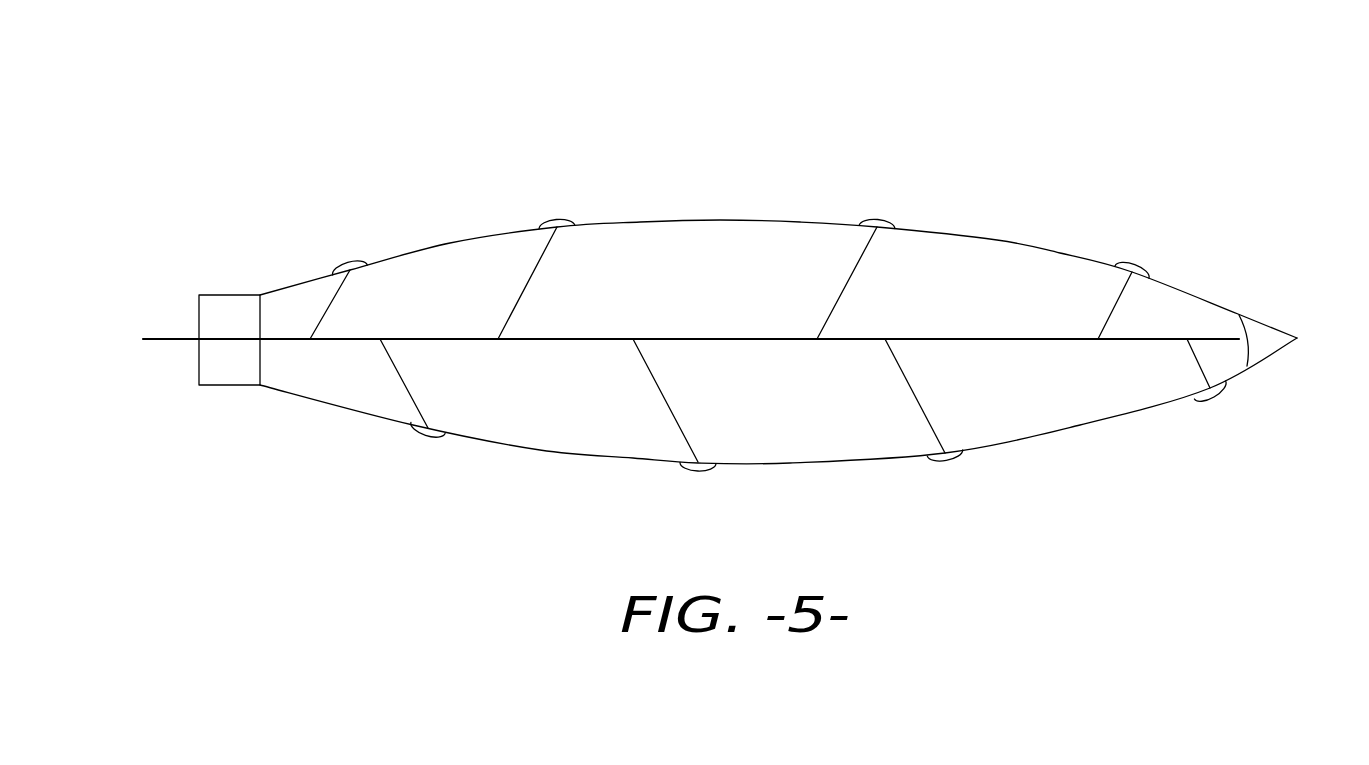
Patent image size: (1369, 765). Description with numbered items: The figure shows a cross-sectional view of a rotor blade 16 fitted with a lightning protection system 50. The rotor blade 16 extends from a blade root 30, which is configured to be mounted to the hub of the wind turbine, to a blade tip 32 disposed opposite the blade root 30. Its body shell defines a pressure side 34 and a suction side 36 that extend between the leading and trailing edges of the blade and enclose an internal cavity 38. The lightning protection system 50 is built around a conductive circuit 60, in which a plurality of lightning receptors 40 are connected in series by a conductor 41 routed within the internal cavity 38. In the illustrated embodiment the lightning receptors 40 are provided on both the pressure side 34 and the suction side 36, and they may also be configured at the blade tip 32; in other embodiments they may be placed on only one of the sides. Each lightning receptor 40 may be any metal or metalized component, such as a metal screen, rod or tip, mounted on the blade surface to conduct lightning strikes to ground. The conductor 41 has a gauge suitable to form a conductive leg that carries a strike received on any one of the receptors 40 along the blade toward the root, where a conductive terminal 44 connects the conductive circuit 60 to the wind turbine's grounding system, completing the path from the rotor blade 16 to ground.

The lightning protection system 50 is at (458, 132).
The rotor blade 16 is at (997, 240).
The blade root 30 is at (225, 294).
The blade tip 32 is at (1298, 339).
The pressure side 34 is at (707, 220).
The suction side 36 is at (820, 463).
The internal cavity 38 is at (467, 268).
The lightning receptors 40 is at (878, 222).
The conductor 41 is at (682, 338).
The conductive terminal 44 is at (175, 342).
The conductive circuit 60 is at (597, 340).